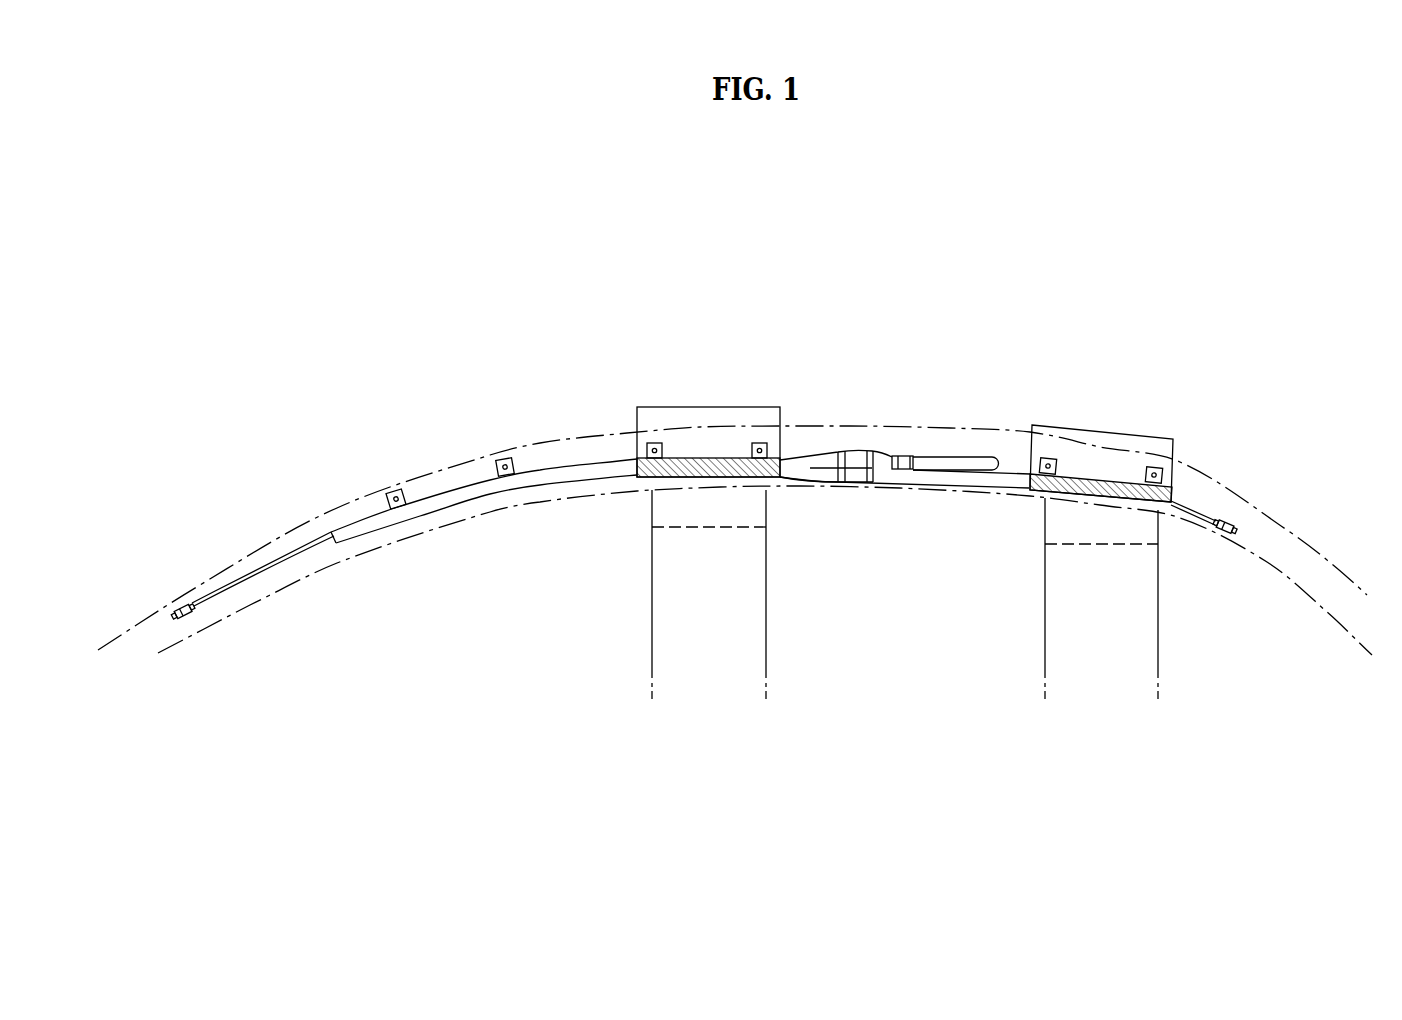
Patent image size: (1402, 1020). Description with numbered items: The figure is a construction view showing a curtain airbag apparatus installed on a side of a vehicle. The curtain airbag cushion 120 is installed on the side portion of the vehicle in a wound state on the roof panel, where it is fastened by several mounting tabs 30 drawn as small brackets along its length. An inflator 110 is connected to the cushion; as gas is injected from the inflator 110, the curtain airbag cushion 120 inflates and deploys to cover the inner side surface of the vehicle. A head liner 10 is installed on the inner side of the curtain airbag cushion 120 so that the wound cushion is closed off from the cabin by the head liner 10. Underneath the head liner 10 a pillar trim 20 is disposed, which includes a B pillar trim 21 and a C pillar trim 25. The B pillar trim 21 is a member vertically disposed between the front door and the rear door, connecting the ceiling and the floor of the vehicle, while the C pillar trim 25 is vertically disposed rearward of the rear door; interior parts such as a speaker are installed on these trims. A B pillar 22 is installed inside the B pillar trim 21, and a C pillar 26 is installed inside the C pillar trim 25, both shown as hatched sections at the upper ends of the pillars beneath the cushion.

The head liner 10 is at (395, 540).
The pillar trim 20 is at (638, 519).
The B pillar trim 21 is at (733, 515).
The B pillar 22 is at (672, 417).
The C pillar trim 25 is at (1075, 530).
The C pillar 26 is at (1165, 450).
The mounting tab 30 is at (758, 446).
The inflator 110 is at (963, 463).
The curtain airbag cushion 120 is at (581, 473).